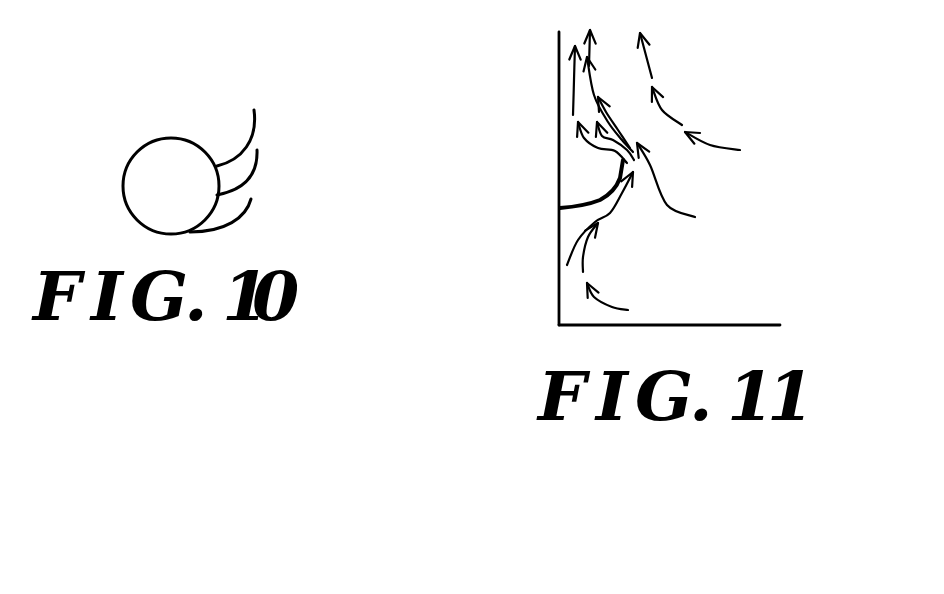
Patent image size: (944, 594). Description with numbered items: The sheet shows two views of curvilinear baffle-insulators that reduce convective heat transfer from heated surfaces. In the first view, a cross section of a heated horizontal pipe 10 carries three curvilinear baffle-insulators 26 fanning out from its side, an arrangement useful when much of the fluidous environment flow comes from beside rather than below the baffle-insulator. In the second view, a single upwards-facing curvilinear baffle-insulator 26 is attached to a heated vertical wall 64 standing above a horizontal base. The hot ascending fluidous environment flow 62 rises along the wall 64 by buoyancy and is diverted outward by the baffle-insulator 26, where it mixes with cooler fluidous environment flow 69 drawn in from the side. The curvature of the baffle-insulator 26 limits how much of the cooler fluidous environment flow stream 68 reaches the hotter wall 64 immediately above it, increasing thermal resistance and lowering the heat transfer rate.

In FIG. 10, the horizontal pipe 10 is at (179, 199).
In FIG. 10, the curvilinear baffle-insulator 26 is at (256, 125).
In FIG. 11, the curvilinear baffle-insulator 26 is at (572, 198).
In FIG. 11, the heated vertical wall 64 is at (558, 67).
In FIG. 11, the cooler fluidous environment flow stream 68 is at (648, 313).
In FIG. 11, the fluidous environment flow 62 is at (647, 310).
In FIG. 11, the cooler fluidous environment flow 69 is at (745, 152).